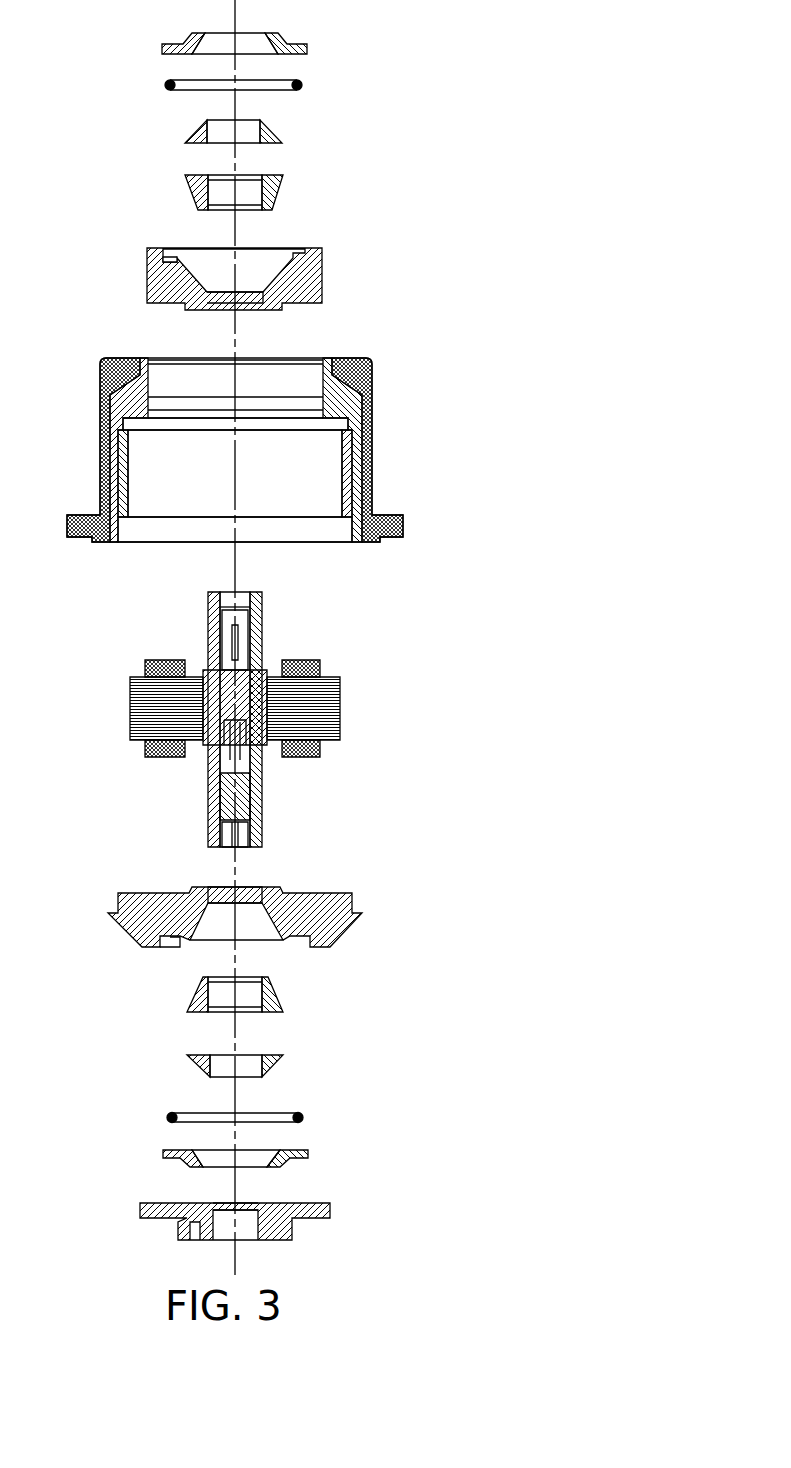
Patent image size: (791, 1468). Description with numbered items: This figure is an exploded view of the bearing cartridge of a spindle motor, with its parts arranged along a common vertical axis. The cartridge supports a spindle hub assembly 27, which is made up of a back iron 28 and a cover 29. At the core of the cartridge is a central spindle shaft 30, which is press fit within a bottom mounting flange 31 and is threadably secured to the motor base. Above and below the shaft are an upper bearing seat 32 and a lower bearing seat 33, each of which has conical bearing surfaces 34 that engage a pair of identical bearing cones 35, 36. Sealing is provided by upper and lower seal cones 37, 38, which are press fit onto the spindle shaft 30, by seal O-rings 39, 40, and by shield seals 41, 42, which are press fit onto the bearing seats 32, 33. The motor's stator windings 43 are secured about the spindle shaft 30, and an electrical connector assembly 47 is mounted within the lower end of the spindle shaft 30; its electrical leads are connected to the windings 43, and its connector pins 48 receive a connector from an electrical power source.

The spindle hub assembly 27 is at (376, 448).
The back iron 28 is at (122, 412).
The cover 29 is at (110, 446).
The spindle shaft 30 is at (258, 612).
The bottom mounting flange 31 is at (294, 1233).
The upper bearing seat 32 is at (326, 272).
The lower bearing seat 33 is at (346, 932).
The conical bearing surfaces 34 is at (203, 268).
The bearing cone 35 is at (285, 190).
The bearing cone 36 is at (285, 995).
The upper seal cone 37 is at (283, 135).
The lower seal cone 38 is at (285, 1068).
The seal O-ring 39 is at (306, 83).
The seal O-ring 40 is at (306, 1118).
The shield seal 41 is at (290, 40).
The shield seal 42 is at (292, 1163).
The stator windings 43 is at (341, 707).
The electrical connector assembly 47 is at (262, 808).
The connector pins 48 is at (245, 848).